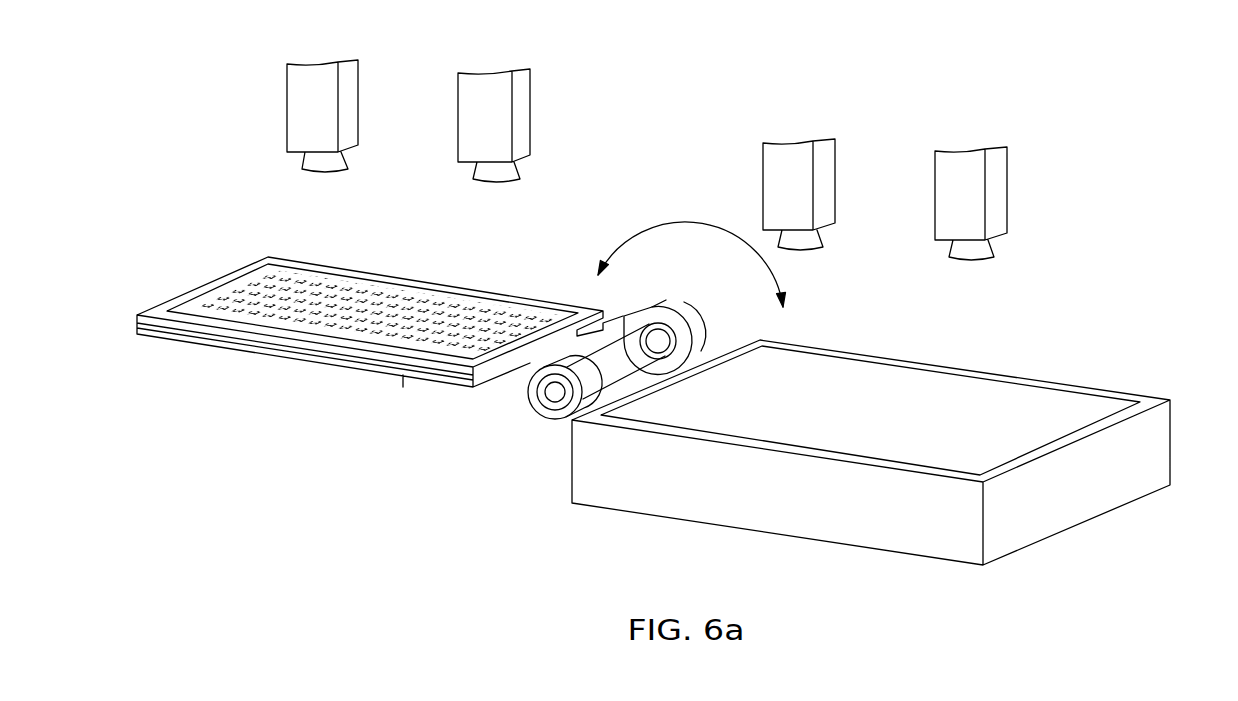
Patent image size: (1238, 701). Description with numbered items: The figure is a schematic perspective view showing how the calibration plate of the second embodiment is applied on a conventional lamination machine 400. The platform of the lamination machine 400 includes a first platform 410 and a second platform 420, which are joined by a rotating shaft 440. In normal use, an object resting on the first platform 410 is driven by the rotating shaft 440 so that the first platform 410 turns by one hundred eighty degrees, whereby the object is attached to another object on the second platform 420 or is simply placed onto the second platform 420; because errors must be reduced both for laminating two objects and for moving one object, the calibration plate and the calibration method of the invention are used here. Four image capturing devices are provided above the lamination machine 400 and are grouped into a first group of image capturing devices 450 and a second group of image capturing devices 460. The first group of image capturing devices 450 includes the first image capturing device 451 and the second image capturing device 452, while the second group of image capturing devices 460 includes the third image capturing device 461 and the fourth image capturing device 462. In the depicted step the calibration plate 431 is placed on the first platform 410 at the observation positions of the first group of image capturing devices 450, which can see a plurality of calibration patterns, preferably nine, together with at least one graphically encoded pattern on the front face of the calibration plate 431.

The lamination machine 400 is at (225, 230).
The first platform 410 is at (203, 322).
The second platform 420 is at (1108, 403).
The calibration plate 431 is at (323, 282).
The rotating shaft 440 is at (553, 392).
The first group of image capturing devices 450 is at (410, 48).
The first image capturing device 451 is at (310, 97).
The second image capturing device 452 is at (480, 105).
The second group of image capturing devices 460 is at (885, 124).
The third image capturing device 461 is at (785, 173).
The fourth image capturing device 462 is at (957, 184).